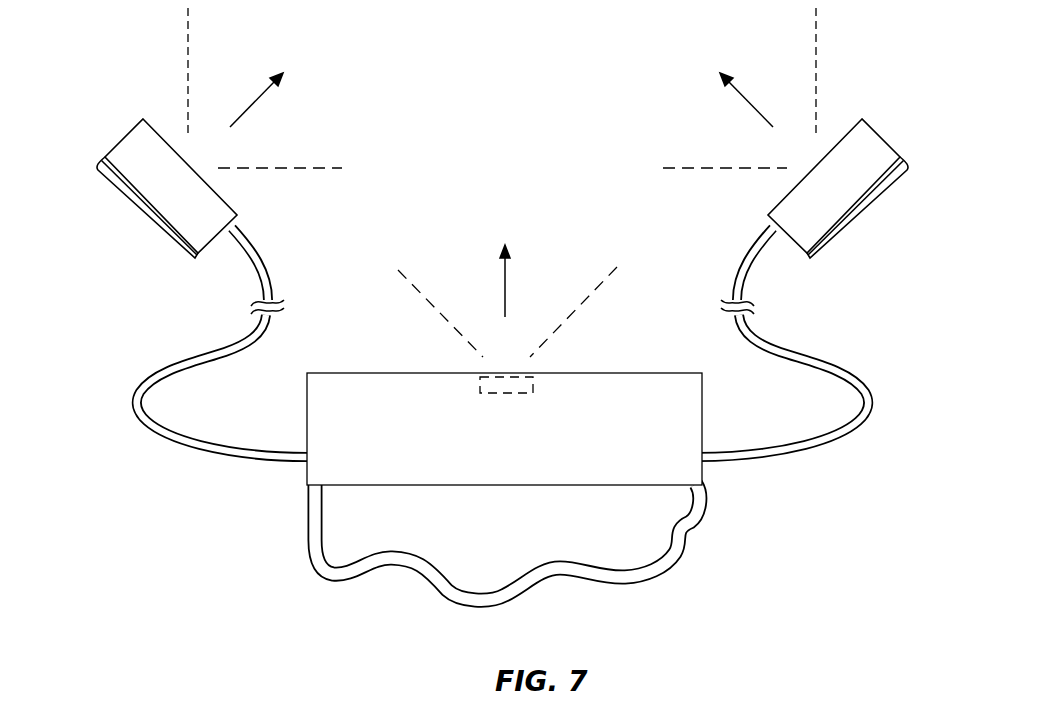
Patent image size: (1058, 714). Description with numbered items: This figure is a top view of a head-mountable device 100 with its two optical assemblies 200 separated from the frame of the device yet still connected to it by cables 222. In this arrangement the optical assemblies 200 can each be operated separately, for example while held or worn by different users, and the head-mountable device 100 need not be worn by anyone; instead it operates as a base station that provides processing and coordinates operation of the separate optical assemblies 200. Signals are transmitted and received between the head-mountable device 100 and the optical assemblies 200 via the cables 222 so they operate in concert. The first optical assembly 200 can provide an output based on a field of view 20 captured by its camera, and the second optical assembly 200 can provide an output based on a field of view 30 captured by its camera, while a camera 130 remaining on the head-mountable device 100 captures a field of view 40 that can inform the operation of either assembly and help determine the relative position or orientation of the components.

The field of view 20 is at (187, 76).
The field of view 30 is at (817, 76).
The field of view 40 is at (444, 313).
The head-mountable device 100 is at (315, 372).
The camera 130 is at (527, 378).
The optical assembly 200 is at (140, 126).
The cable 222 is at (261, 318).